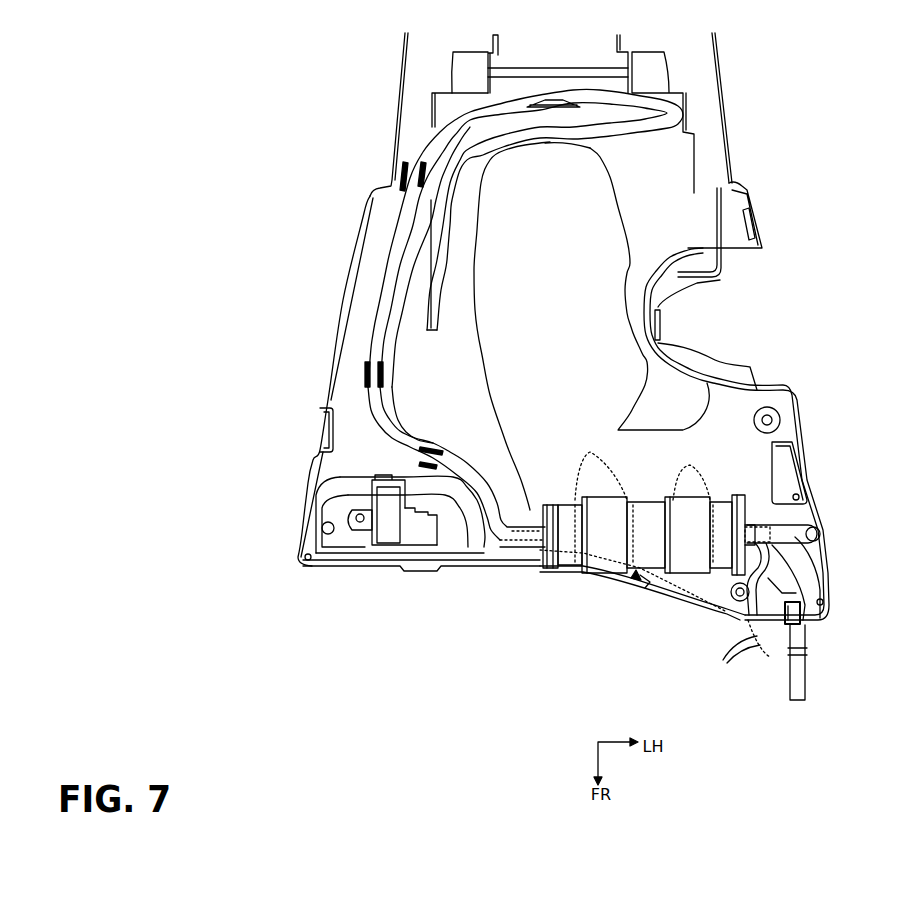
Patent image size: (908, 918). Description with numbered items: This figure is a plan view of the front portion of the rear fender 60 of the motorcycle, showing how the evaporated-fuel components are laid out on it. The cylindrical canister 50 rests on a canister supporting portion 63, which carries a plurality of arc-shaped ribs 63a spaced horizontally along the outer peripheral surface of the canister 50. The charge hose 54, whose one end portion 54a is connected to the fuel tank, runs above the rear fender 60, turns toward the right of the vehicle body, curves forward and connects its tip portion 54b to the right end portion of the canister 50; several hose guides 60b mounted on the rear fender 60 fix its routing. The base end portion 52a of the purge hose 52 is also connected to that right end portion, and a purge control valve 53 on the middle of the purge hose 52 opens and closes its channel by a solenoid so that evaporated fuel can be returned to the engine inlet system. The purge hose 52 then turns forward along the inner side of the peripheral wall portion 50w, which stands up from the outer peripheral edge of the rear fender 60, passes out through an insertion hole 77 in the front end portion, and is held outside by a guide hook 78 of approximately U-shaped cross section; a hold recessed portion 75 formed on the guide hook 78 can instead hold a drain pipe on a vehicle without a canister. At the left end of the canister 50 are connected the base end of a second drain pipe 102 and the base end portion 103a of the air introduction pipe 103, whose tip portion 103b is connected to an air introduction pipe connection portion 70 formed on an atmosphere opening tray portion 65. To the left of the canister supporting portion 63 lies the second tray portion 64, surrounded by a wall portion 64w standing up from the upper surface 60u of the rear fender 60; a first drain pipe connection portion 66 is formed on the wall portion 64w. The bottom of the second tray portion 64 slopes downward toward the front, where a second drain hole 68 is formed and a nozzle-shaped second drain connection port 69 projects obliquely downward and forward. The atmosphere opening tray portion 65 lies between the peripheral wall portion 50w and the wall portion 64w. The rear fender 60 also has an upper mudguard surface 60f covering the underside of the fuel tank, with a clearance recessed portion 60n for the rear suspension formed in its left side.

The canister 50 is at (633, 582).
The peripheral wall portion 50w is at (498, 572).
The purge hose 52 is at (475, 528).
The base end portion 52a is at (537, 565).
The purge control valve 53 is at (396, 533).
The charge hose 54 is at (398, 243).
The one end portion 54a is at (430, 316).
The tip portion 54b is at (533, 520).
The rear fender 60 is at (718, 77).
The hose guides 60b is at (553, 101).
The upper mudguard surface 60f is at (729, 138).
The clearance recessed portion 60n is at (723, 353).
The upper surface 60u is at (762, 463).
The canister supporting portion 63 is at (647, 500).
The ribs 63a is at (632, 466).
The second tray portion 64 is at (790, 580).
The wall portion 64w is at (780, 480).
The atmosphere opening tray portion 65 is at (812, 577).
The first drain pipe connection portion 66 is at (738, 602).
The second drain hole 68 is at (805, 617).
The second drain connection port 69 is at (807, 637).
The air introduction pipe connection portion 70 is at (827, 535).
The hold recessed portion 75 is at (768, 640).
The insertion hole 77 is at (645, 585).
The guide hook 78 is at (757, 652).
The second drain pipe 102 is at (715, 595).
The air introduction pipe 103 is at (795, 550).
The base end portion 103a is at (752, 505).
The tip portion 103b is at (823, 527).